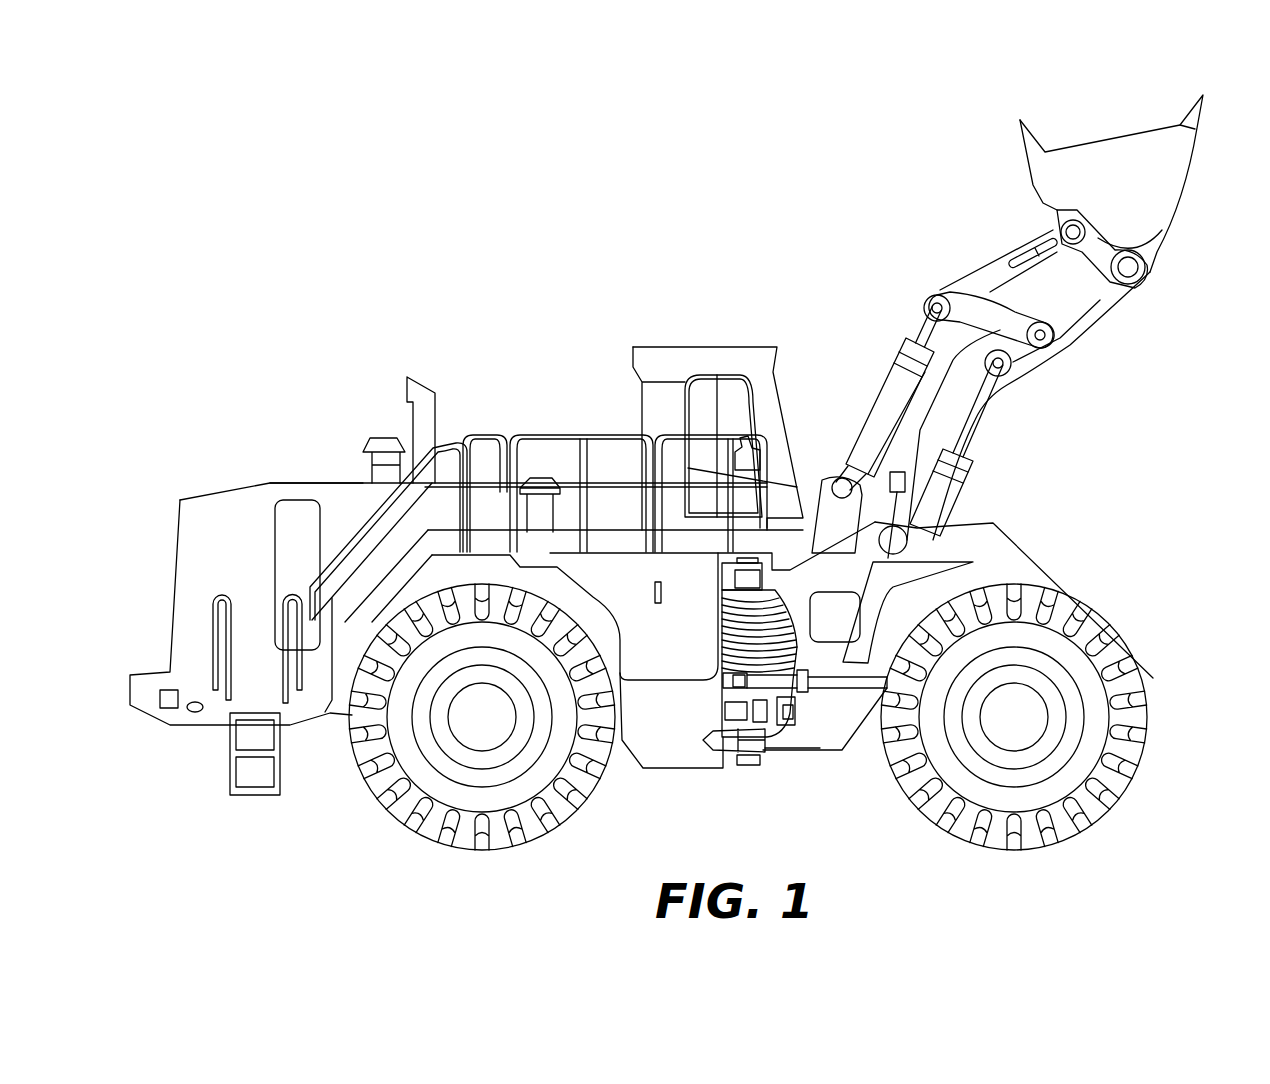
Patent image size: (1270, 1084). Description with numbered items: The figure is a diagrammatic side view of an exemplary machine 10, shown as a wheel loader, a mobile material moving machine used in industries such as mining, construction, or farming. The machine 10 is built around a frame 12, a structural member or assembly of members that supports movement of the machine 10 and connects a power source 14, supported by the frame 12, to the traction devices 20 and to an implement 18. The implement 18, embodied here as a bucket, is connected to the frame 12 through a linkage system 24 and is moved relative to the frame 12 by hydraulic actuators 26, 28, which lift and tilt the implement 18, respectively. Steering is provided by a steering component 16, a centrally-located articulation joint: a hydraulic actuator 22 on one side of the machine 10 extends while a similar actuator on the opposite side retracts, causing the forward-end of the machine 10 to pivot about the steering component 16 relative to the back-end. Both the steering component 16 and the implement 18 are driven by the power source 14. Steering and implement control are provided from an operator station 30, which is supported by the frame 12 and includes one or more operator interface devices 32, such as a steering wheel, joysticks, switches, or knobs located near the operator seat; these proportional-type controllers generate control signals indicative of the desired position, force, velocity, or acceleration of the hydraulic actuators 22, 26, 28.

The machine 10 is at (261, 282).
The frame 12 is at (922, 548).
The power source 14 is at (243, 564).
The steering component 16 is at (745, 768).
The implement 18 is at (1147, 186).
The traction devices 20 is at (600, 792).
The hydraulic actuator 22 is at (834, 692).
The linkage system 24 is at (1071, 338).
The hydraulic actuator 26 is at (950, 495).
The hydraulic actuator 28 is at (888, 392).
The operator station 30 is at (730, 415).
The operator interface devices 32 is at (748, 432).